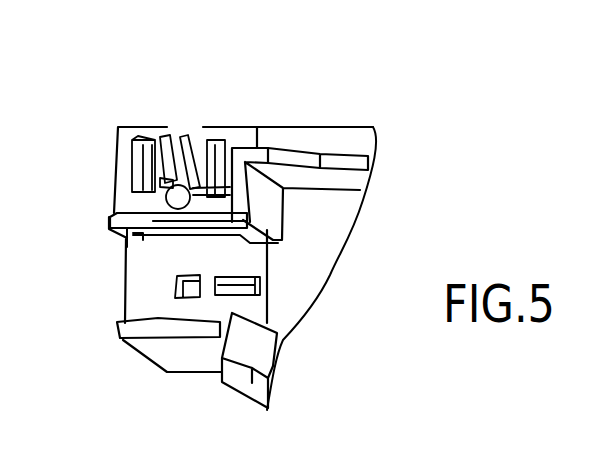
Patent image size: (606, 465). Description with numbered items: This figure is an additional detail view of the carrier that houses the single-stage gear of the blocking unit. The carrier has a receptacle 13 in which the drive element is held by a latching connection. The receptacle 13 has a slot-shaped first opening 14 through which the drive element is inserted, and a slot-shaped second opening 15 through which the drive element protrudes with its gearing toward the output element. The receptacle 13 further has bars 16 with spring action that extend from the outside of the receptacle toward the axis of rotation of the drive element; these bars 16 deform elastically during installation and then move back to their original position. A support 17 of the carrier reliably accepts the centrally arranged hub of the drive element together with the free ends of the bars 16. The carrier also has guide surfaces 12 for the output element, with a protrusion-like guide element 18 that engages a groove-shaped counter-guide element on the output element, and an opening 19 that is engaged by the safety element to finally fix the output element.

The guide surface 12 is at (323, 223).
The receptacle 13 is at (245, 110).
The first opening 14 is at (158, 126).
The second opening 15 is at (125, 242).
The bars with spring action 16 is at (196, 140).
The support 17 is at (163, 203).
The guide element 18 is at (233, 283).
The opening 19 is at (190, 288).